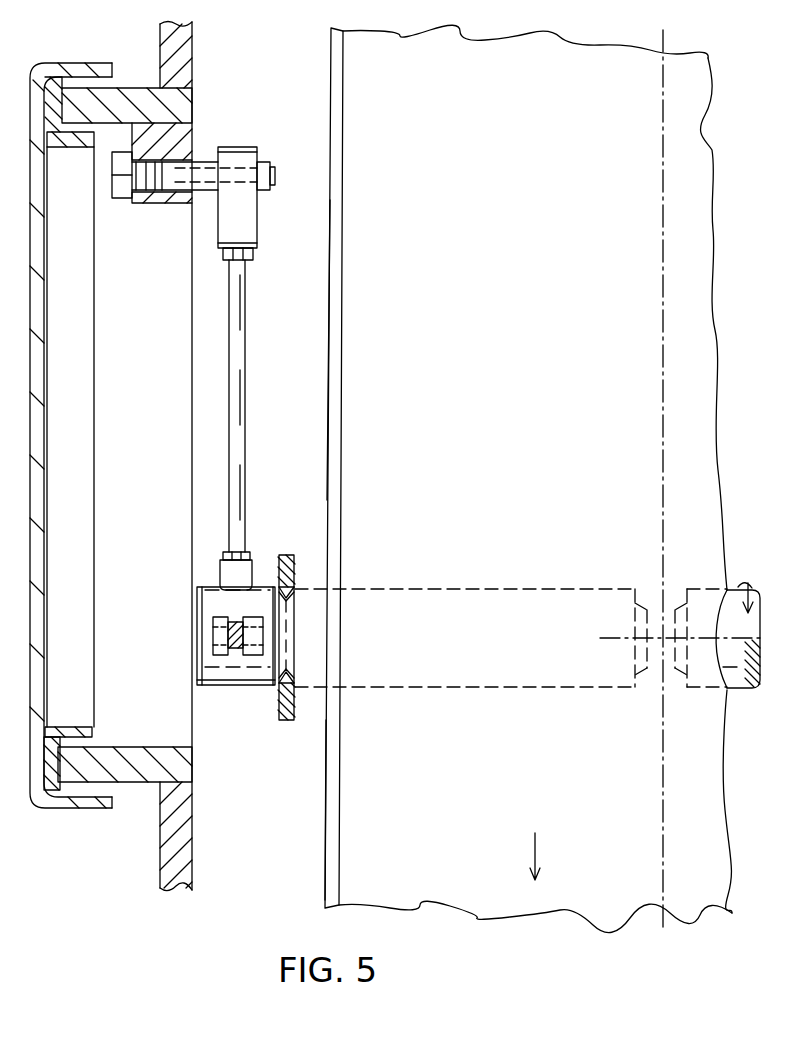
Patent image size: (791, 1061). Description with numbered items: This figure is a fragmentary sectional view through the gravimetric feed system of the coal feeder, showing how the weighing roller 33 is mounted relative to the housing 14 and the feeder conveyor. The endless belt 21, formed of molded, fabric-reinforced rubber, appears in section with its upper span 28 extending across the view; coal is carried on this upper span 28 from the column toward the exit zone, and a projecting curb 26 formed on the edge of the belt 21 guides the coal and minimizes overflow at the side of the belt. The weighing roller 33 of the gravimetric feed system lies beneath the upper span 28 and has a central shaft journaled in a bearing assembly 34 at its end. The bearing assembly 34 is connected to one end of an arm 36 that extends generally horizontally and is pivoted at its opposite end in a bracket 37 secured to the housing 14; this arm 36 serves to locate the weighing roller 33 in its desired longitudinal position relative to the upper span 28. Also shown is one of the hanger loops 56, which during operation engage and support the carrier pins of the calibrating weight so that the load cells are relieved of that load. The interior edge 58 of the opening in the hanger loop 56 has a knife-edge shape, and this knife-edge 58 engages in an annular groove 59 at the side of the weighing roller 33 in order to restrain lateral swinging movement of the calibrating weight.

The housing 14 is at (180, 855).
The endless belt 21 is at (362, 270).
The projecting curb 26 is at (333, 338).
The upper span 28 is at (342, 788).
The weighing roller 33 is at (315, 590).
The bearing assembly 34 is at (233, 675).
The arm 36 is at (237, 413).
The bracket 37 is at (172, 205).
The hanger loop 56 is at (285, 553).
The interior edge 58 is at (292, 596).
The annular groove 59 is at (300, 702).